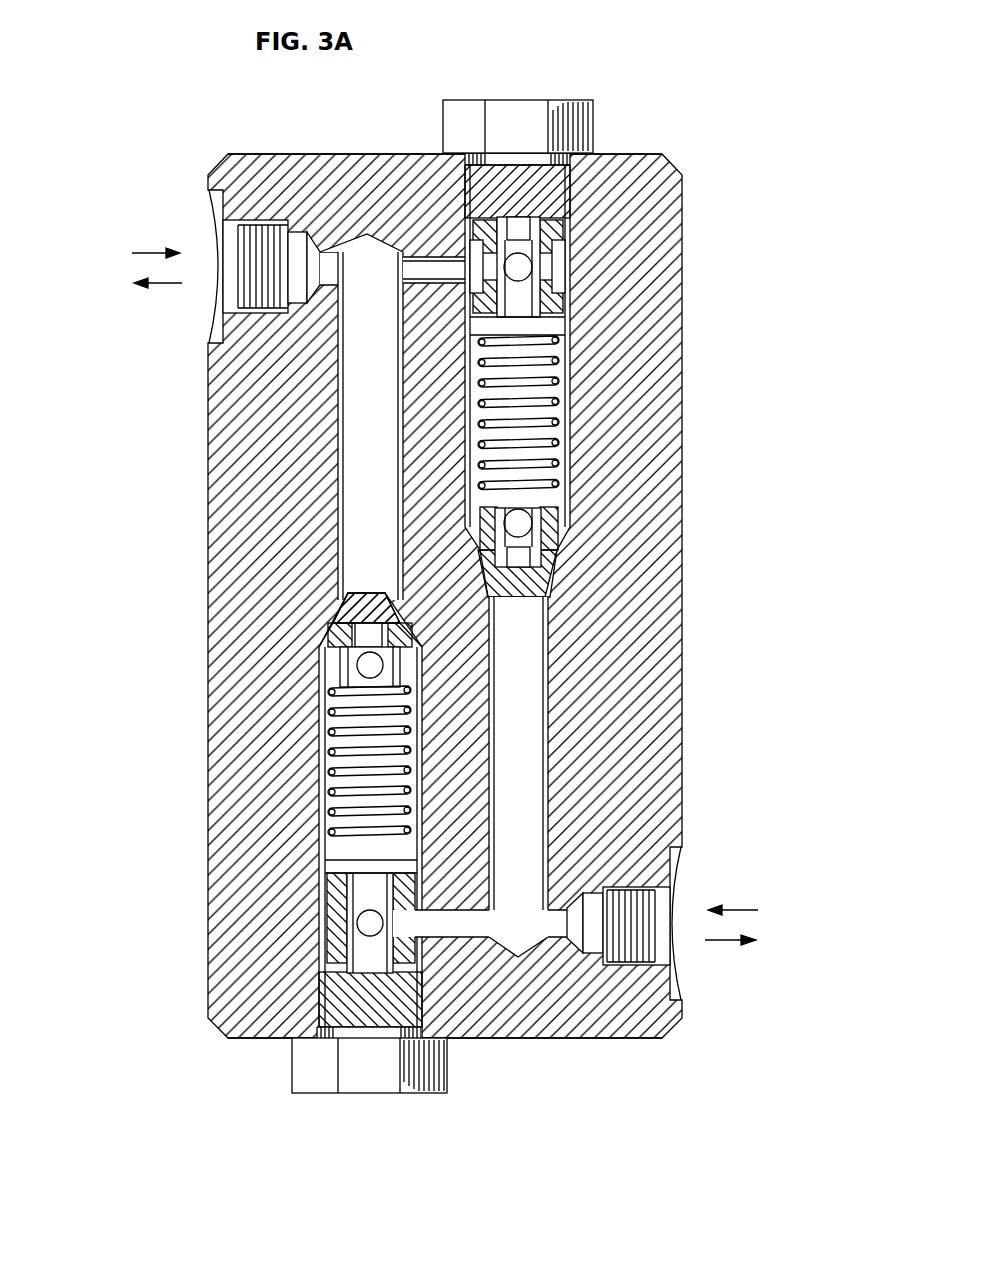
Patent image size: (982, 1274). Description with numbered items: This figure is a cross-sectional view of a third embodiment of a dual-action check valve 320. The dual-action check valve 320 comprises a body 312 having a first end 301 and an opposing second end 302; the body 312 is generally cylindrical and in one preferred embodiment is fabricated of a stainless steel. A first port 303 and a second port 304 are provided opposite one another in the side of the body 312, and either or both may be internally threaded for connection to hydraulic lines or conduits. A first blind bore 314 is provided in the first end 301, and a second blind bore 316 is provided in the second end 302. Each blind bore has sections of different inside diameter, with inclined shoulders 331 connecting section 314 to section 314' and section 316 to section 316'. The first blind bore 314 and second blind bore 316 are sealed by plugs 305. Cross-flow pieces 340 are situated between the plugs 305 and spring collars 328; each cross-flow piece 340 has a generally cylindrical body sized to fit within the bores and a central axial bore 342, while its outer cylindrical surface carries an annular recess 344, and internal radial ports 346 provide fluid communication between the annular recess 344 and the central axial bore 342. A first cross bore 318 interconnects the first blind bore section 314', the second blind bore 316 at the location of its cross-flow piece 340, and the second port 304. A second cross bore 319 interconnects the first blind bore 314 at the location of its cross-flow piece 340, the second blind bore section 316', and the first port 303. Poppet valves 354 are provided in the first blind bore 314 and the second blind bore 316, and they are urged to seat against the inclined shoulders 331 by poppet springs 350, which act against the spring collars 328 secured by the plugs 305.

The first end 301 is at (330, 154).
The second end 302 is at (565, 1040).
The first port 303 is at (222, 290).
The second port 304 is at (670, 907).
The plug 305 is at (520, 100).
The body 312 is at (667, 506).
The first blind bore 314 is at (626, 375).
The first blind bore section 314' is at (641, 777).
The second blind bore 316 is at (260, 815).
The second blind bore section 316' is at (253, 417).
The first cross bore 318 is at (475, 935).
The second cross bore 319 is at (416, 254).
The dual-action check valve 320 is at (636, 124).
The spring collar 328 is at (568, 325).
The inclined shoulder 331 is at (566, 550).
The cross-flow piece 340 is at (560, 231).
The central axial bore 342 is at (528, 292).
The annular recess 344 is at (524, 266).
The internal radial port 346 is at (562, 270).
The poppet spring 350 is at (565, 472).
The poppet valve 354 is at (527, 600).